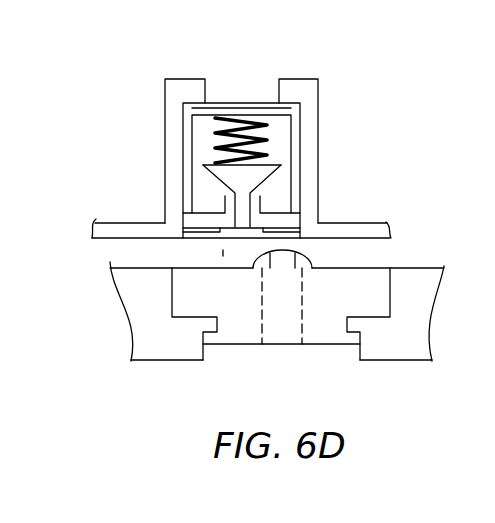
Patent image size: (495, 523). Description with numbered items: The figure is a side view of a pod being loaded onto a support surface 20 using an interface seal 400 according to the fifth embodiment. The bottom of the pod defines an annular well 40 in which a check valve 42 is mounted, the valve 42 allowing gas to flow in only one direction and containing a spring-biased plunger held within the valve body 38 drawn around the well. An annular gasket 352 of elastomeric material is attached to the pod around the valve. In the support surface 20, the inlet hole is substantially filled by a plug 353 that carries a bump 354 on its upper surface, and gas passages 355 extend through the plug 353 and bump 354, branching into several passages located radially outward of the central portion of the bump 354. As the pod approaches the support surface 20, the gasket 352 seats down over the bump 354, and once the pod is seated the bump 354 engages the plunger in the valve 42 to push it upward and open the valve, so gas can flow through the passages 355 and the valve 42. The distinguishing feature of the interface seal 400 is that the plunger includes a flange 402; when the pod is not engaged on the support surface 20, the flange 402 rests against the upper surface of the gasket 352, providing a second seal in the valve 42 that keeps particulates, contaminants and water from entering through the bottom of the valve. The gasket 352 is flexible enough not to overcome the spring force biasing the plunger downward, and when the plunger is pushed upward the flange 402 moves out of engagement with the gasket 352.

The support surface 20 is at (145, 313).
The bracket 38 is at (297, 88).
The annular well 40 is at (288, 195).
The valve 42 is at (278, 150).
The annular gasket 352 is at (199, 232).
The plug 353 is at (366, 281).
The bump 354 is at (306, 262).
The gas passages 355 is at (278, 330).
The interface seal 400 is at (223, 250).
The flange 402 is at (217, 214).